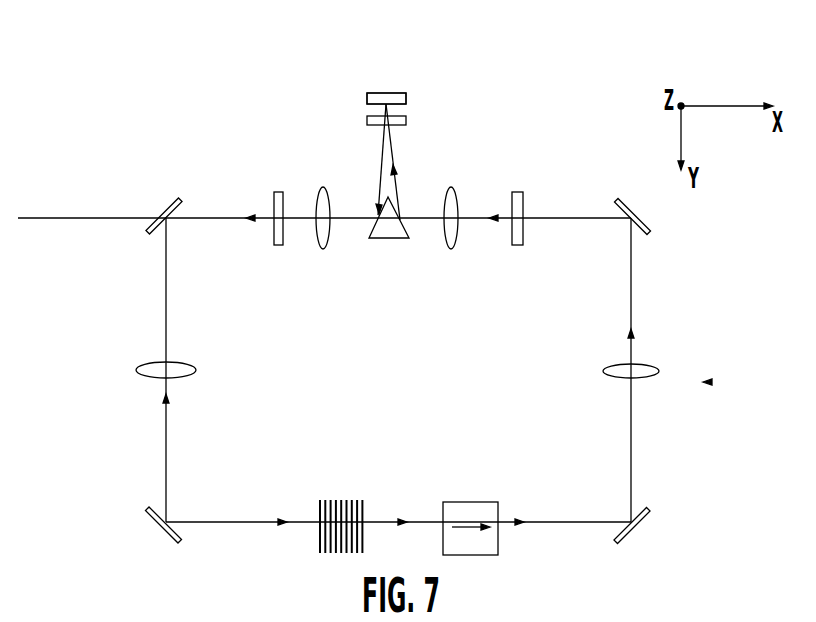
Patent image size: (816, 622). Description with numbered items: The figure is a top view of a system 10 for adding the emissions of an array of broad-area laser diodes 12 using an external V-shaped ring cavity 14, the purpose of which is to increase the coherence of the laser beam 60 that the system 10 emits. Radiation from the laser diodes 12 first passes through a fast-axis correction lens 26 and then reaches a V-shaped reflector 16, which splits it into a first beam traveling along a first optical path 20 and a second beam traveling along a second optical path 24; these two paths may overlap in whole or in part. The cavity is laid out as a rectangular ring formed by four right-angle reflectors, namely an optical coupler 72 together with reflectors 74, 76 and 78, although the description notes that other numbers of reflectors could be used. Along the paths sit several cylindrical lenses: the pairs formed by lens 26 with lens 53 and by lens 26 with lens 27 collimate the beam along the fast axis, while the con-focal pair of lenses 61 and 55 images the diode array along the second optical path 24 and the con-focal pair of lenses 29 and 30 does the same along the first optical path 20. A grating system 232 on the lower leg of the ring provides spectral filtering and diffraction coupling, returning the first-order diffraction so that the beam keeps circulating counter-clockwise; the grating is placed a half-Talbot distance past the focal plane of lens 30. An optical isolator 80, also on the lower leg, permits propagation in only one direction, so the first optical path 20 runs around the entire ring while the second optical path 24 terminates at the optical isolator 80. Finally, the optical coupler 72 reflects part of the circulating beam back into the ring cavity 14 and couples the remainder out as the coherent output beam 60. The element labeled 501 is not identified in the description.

The system 10 is at (178, 43).
The laser diodes 12 is at (407, 93).
The V-shaped ring cavity 14 is at (711, 382).
The V-shaped reflector 16 is at (387, 240).
The first optical path 20 is at (205, 218).
The second optical path 24 is at (631, 280).
The fast-axis correction lens 26 is at (406, 121).
The cylindrical lens 27 is at (278, 192).
The cylindrical lens 29 is at (323, 250).
The cylindrical lens 30 is at (196, 372).
The cylindrical lens 53 is at (518, 192).
The cylindrical lens 55 is at (647, 364).
The laser beam 60 is at (62, 222).
The cylindrical lens 61 is at (451, 250).
The optical coupler 72 is at (165, 206).
The reflector 74 is at (150, 516).
The reflector 76 is at (643, 524).
The reflector 78 is at (650, 228).
The optical isolator 80 is at (472, 502).
The grating system 232 is at (342, 500).
The laser gain plate 501 is at (386, 81).